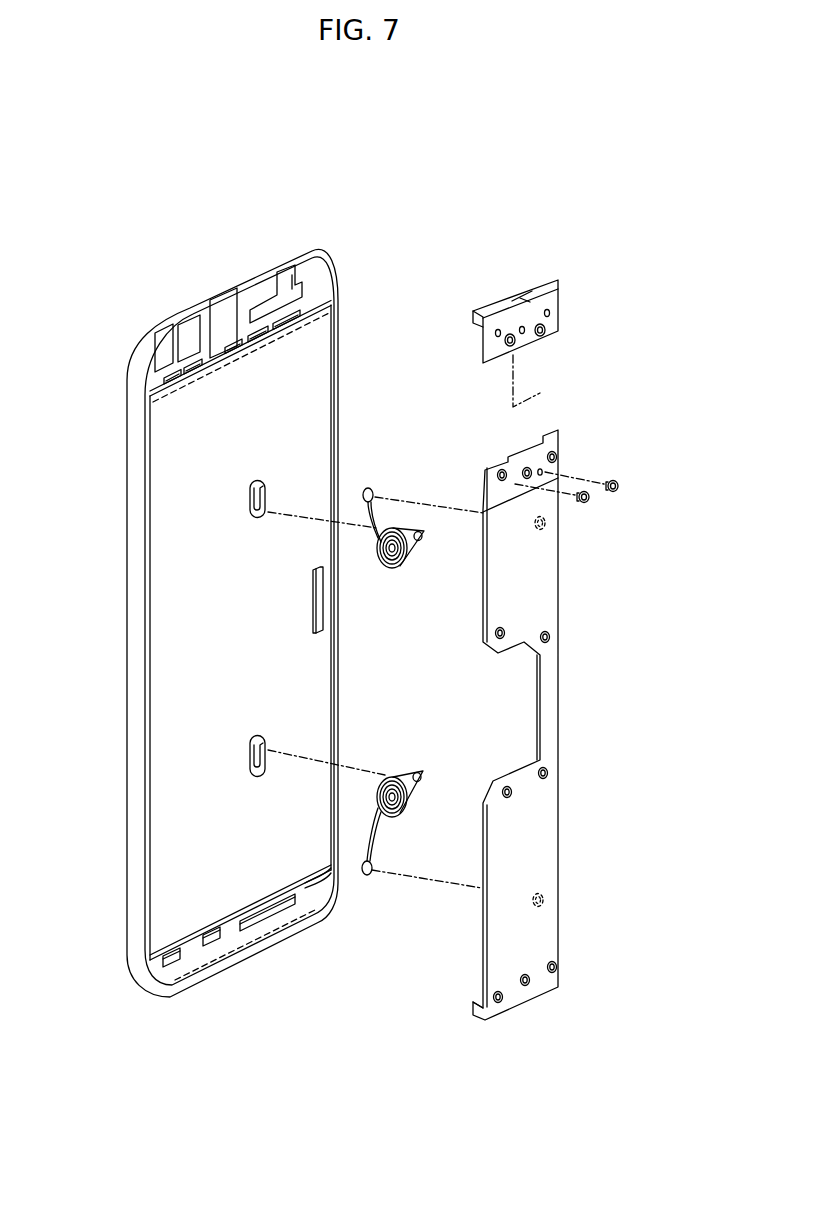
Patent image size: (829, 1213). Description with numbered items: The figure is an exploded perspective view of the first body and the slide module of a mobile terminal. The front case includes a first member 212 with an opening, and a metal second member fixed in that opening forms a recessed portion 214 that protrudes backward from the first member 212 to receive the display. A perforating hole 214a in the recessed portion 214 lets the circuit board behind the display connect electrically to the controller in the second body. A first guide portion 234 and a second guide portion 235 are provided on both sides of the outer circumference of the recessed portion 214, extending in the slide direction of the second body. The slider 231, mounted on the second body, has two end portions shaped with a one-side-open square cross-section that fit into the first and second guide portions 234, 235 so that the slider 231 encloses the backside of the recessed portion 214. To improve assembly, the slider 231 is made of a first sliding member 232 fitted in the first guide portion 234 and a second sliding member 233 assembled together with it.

The first member 212 is at (153, 330).
The recessed portion 214 is at (168, 792).
The perforating hole 214a is at (320, 633).
The slider 231 is at (599, 649).
The first sliding member 232 is at (558, 279).
The second sliding member 233 is at (548, 557).
The first guide portion 234 is at (308, 320).
The second guide portion 235 is at (305, 887).